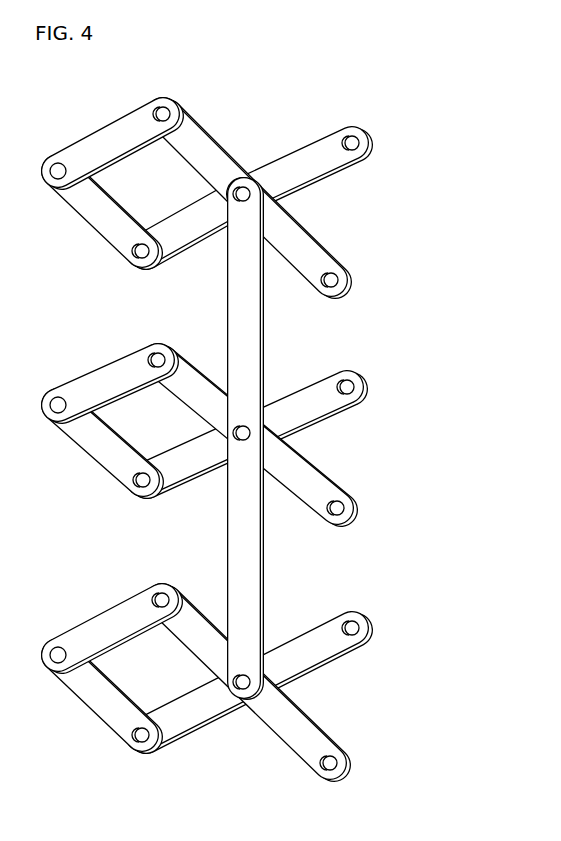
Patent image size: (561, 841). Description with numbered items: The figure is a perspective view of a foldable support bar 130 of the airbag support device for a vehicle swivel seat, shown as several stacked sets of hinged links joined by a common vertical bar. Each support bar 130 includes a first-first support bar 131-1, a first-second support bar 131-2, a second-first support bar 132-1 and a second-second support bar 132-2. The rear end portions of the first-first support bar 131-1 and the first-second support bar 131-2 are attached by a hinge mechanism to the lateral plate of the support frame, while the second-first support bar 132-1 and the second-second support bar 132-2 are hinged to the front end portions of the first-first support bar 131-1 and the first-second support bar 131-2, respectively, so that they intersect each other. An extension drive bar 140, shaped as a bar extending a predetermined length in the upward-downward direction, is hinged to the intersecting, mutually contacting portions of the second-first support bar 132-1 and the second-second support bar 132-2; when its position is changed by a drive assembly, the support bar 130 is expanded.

The support bar 130 is at (292, 175).
The (1-1)-st support bar 131-1 is at (117, 138).
The (1-2)-st support bar 131-2 is at (262, 237).
The (2-1)-nd support bar 132-1 is at (205, 153).
The (2-2)-nd support bar 132-2 is at (293, 182).
The extension drive bar 140 is at (243, 335).